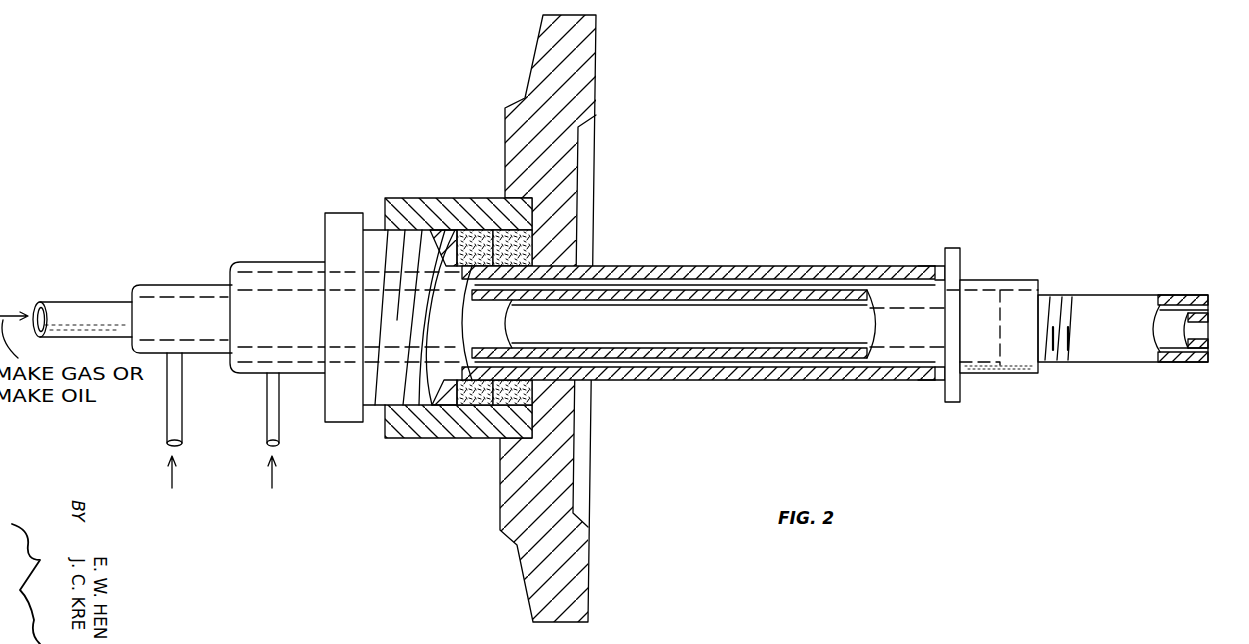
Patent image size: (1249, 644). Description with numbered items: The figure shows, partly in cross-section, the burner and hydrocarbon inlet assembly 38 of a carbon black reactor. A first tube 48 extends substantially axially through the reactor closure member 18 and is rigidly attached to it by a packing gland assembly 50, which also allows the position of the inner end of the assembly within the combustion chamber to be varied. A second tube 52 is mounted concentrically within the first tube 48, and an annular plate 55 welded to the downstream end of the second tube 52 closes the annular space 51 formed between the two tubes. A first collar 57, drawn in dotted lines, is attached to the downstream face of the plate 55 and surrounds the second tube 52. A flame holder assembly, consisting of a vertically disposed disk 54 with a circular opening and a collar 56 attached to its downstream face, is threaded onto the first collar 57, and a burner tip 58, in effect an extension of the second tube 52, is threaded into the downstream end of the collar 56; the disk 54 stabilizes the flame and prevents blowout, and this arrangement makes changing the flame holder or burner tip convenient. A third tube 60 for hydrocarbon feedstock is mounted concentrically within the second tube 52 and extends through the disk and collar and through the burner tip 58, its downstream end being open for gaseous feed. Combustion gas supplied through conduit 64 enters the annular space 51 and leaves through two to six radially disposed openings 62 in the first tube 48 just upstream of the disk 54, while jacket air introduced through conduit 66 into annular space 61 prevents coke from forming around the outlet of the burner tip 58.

The closure member 18 is at (598, 58).
The burner and hydrocarbon inlet assembly 38 is at (283, 301).
The first tube 48 is at (283, 262).
The packing gland assembly 50 is at (431, 198).
The annular space 51 is at (250, 365).
The second tube 52 is at (158, 285).
The flame holder disk 54 is at (952, 247).
The annular plate 55 is at (936, 382).
The collar 56 is at (1020, 280).
The first collar 57 is at (990, 362).
The burner tip 58 is at (1121, 295).
The third tube 60 is at (97, 302).
The annular space 61 is at (201, 342).
The radially disposed openings 62 is at (918, 266).
The conduit 64 is at (279, 434).
The conduit 66 is at (182, 436).